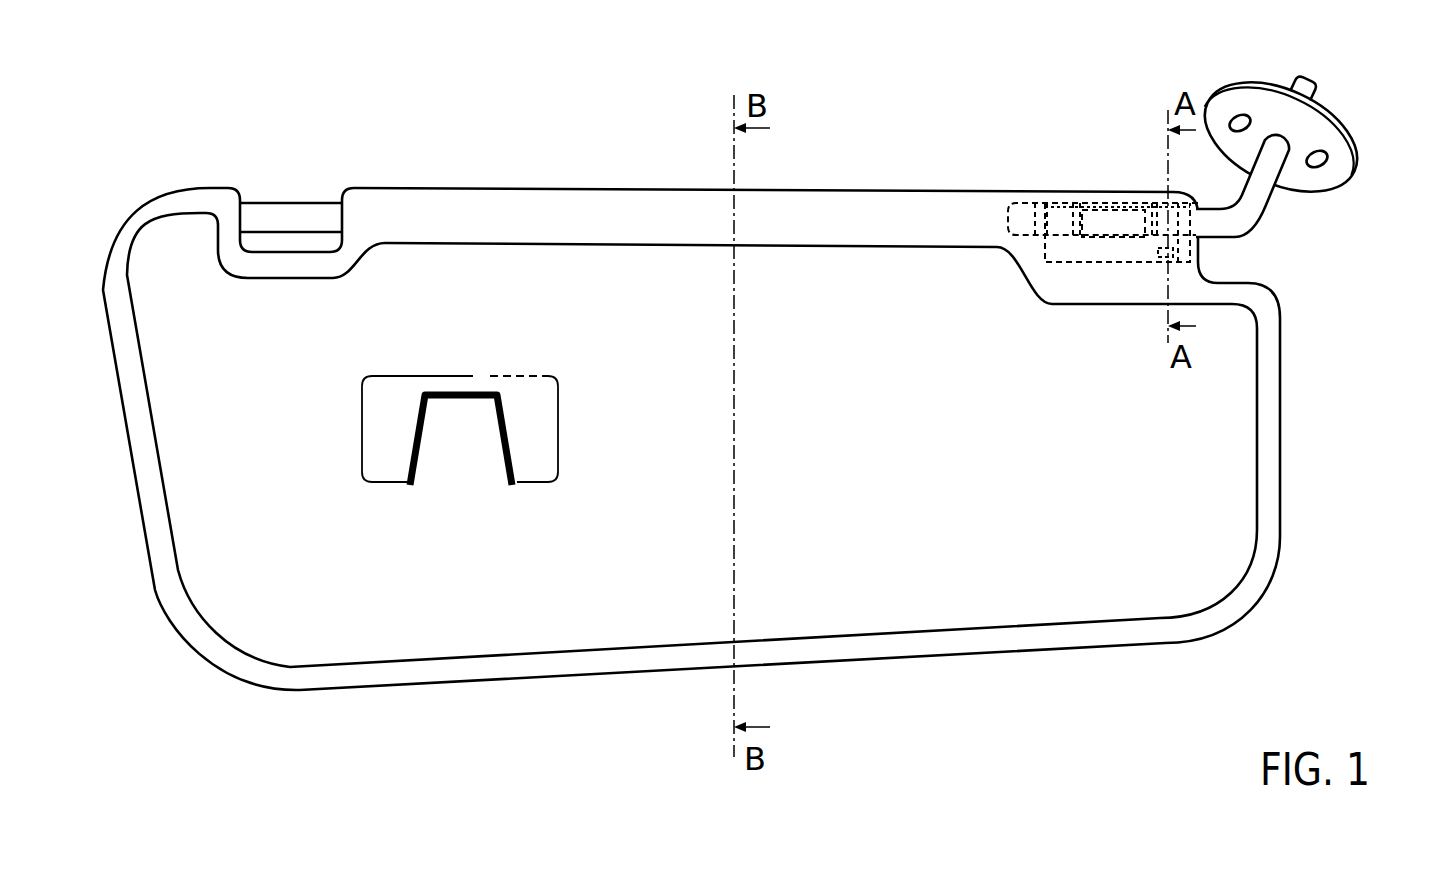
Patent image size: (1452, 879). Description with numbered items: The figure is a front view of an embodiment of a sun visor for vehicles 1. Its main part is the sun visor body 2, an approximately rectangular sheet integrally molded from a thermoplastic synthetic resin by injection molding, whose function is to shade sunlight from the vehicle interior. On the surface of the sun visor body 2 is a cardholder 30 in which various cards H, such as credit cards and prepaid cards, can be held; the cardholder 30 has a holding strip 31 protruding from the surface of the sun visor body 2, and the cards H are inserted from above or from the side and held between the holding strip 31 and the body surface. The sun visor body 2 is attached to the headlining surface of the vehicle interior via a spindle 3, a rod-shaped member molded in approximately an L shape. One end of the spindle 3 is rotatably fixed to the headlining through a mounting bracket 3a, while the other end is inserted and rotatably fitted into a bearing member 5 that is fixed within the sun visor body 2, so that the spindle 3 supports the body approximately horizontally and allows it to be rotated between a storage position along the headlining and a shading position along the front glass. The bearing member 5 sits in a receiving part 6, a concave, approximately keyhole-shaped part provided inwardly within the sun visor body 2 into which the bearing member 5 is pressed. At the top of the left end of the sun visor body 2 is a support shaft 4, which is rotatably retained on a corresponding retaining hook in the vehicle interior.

The sun visor for vehicles 1 is at (615, 127).
The sun visor body 2 is at (267, 602).
The spindle 3 is at (1255, 197).
The mounting bracket 3a is at (1307, 128).
The support shaft 4 is at (292, 212).
The bearing member 5 is at (1077, 250).
The receiving part 6 is at (1078, 203).
The cardholder 30 is at (470, 392).
The holding strip 31 is at (448, 438).
The cards H is at (383, 483).